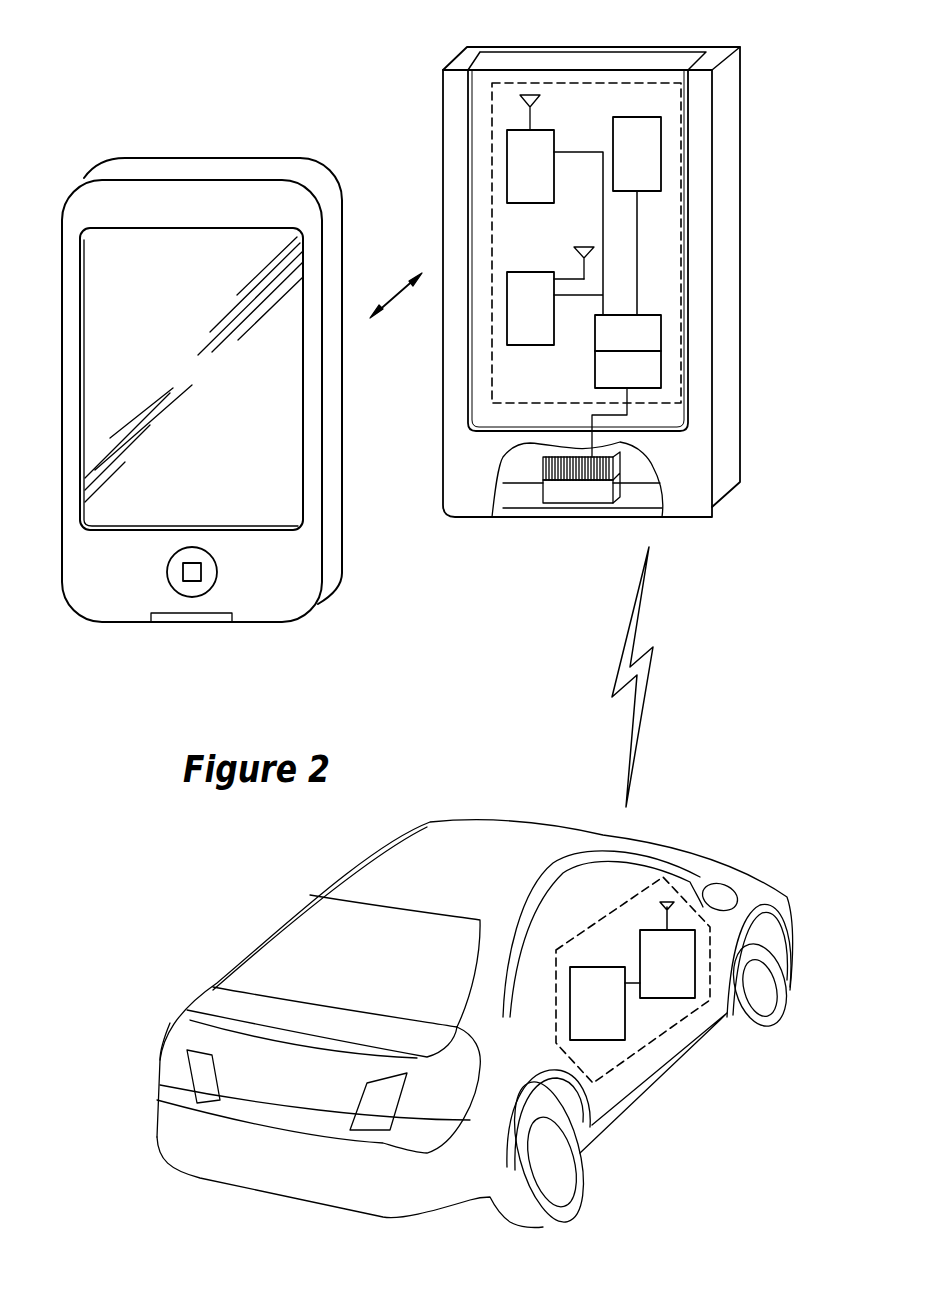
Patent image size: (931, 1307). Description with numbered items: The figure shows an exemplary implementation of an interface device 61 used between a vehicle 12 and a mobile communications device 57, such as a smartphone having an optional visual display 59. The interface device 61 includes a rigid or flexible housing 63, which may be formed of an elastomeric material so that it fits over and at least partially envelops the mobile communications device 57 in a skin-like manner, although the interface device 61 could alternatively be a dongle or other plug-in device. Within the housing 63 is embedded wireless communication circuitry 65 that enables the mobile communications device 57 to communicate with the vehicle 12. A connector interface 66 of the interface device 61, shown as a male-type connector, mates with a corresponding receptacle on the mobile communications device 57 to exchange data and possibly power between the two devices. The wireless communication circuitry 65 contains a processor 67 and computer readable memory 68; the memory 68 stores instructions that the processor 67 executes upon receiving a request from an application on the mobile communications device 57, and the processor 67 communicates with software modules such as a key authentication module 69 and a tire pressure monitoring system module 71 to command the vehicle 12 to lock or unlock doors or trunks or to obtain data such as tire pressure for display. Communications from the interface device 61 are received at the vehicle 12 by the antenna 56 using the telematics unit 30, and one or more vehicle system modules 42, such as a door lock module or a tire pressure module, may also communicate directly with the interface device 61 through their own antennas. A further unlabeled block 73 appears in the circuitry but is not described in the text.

The vehicle 12 is at (476, 1028).
The telematics unit 30 is at (680, 974).
The vehicle system module (VSM) 42 is at (610, 1016).
The antenna 56 is at (662, 920).
The mobile communications device 57 is at (202, 415).
The visual display 59 is at (160, 530).
The interface device 61 is at (602, 278).
The housing 63 is at (443, 90).
The wireless communication circuitry 65 is at (602, 83).
The connector interface 66 is at (576, 499).
The processor 67 is at (641, 347).
The computer readable memory 68 is at (641, 384).
The key authentication module 69 is at (543, 320).
The tire pressure monitoring system (TPMS) module 71 is at (543, 178).
The power module 73 is at (650, 166).